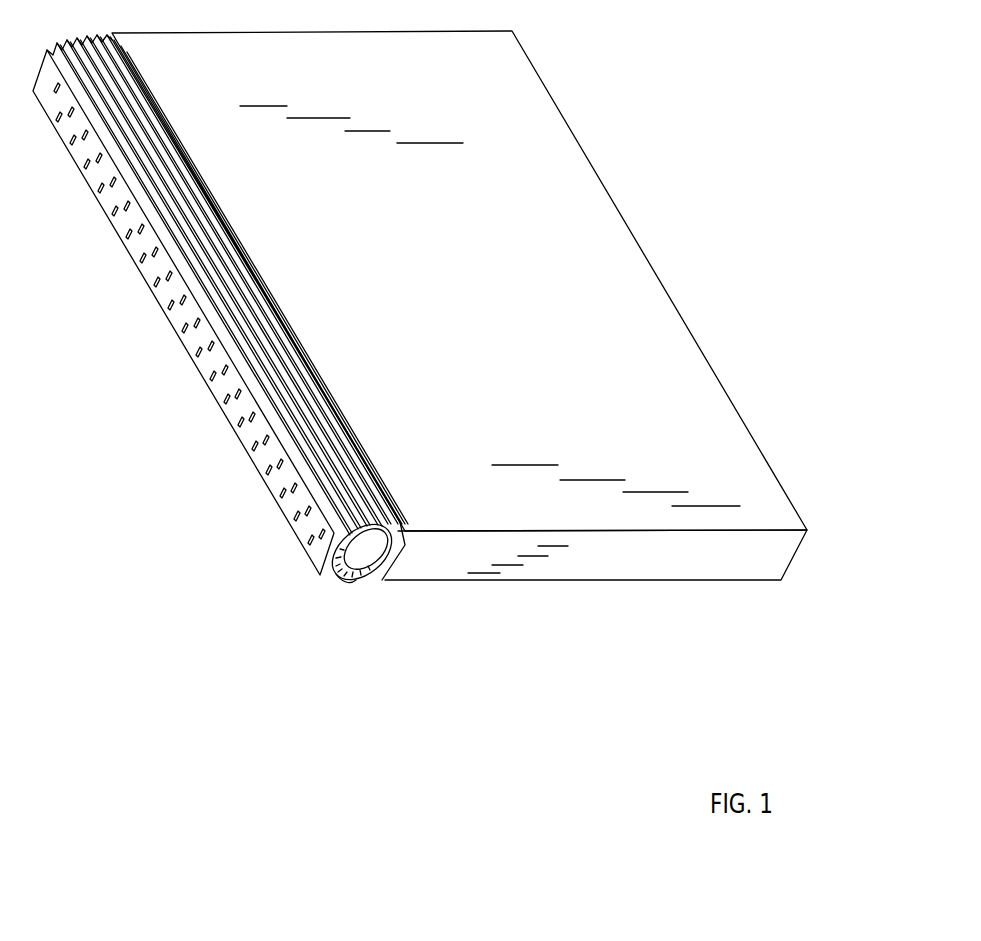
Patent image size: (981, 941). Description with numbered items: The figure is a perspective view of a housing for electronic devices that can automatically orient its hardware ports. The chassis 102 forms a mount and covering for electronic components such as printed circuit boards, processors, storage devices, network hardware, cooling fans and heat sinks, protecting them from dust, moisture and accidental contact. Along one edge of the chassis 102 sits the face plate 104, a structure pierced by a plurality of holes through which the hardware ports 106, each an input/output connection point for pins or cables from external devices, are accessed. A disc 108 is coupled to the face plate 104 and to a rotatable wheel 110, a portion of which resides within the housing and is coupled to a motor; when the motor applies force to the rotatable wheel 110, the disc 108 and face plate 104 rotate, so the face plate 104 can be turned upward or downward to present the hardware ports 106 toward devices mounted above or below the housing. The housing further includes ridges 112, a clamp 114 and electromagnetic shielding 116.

The chassis 102 is at (617, 562).
The face plate 104 is at (255, 468).
The hardware ports 106 is at (232, 410).
The disc 108 is at (340, 572).
The rotatable wheel 110 is at (355, 562).
The ridges 112 is at (333, 548).
The clamp 114 is at (363, 562).
The electromagnetic shielding 116 is at (343, 583).